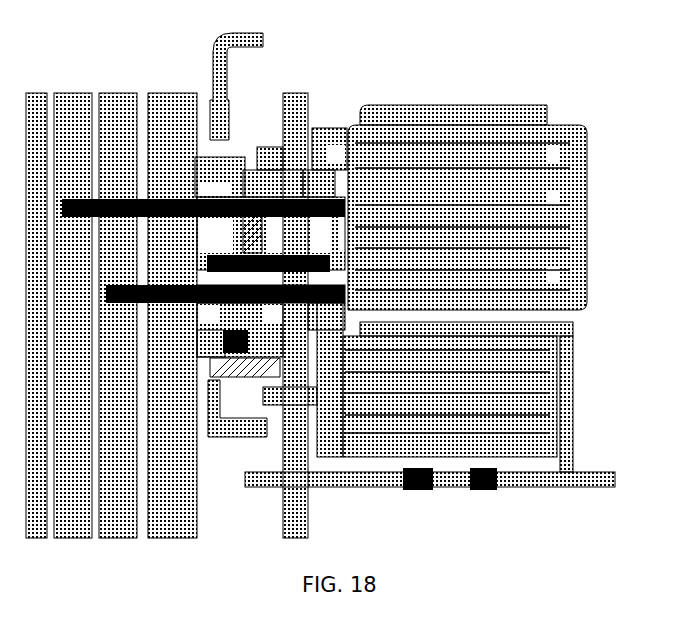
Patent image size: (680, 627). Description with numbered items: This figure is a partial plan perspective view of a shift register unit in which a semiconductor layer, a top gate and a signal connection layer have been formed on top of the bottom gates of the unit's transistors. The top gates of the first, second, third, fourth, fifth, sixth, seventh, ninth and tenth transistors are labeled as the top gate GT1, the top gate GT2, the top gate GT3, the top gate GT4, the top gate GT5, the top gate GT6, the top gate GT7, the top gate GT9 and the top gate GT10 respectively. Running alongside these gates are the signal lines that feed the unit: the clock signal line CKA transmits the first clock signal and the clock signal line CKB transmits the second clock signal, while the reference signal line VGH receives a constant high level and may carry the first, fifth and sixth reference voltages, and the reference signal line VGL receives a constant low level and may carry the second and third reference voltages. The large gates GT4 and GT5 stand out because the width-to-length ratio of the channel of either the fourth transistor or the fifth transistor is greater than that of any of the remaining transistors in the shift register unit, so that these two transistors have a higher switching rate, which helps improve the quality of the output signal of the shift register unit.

The clock signal line CKB is at (73, 307).
The clock signal line CKA is at (118, 307).
The reference signal line VGL is at (172, 307).
The reference signal line VGH is at (297, 308).
The top gate of the first transistor GT1 is at (220, 177).
The top gate of the second transistor GT2 is at (273, 183).
The top gate of the third transistor GT3 is at (252, 231).
The top gate of the fourth transistor GT4 is at (517, 217).
The top gate of the fifth transistor GT5 is at (490, 426).
The top gate of the sixth transistor GT6 is at (271, 294).
The top gate of the seventh transistor GT7 is at (211, 343).
The top gate of the ninth transistor GT9 is at (319, 183).
The top gate of the tenth transistor GT10 is at (245, 367).